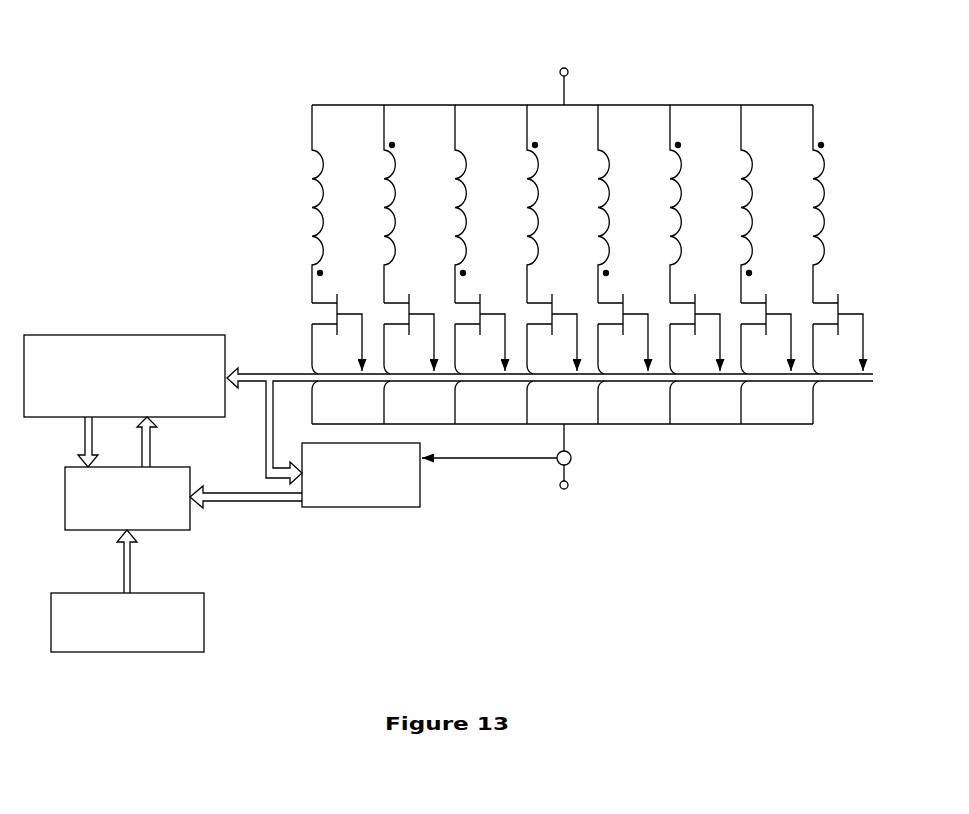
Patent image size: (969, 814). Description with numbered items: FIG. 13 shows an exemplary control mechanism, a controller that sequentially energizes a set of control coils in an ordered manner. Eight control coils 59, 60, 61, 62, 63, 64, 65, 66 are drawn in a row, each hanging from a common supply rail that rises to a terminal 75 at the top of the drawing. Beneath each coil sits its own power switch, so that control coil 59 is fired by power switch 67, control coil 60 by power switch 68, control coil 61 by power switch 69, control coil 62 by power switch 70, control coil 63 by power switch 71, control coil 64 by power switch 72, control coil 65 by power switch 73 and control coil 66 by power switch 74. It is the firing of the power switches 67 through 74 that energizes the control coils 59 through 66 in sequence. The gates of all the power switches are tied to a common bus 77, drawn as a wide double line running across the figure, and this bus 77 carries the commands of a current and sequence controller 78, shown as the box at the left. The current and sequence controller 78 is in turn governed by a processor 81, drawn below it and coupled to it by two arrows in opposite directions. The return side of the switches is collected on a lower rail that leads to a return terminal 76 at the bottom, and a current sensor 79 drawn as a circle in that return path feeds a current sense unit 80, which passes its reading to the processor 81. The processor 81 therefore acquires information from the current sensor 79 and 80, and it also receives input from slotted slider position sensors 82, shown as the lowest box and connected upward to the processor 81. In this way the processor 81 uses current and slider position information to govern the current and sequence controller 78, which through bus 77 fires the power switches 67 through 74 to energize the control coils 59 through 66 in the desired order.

The control coil 59 is at (309, 190).
The control coil 60 is at (381, 190).
The control coil 61 is at (452, 190).
The control coil 62 is at (524, 190).
The control coil 63 is at (595, 190).
The control coil 64 is at (667, 190).
The control coil 65 is at (738, 190).
The control coil 66 is at (810, 190).
The power switch 67 is at (329, 292).
The power switch 68 is at (401, 292).
The power switch 69 is at (472, 292).
The power switch 70 is at (544, 292).
The power switch 71 is at (615, 292).
The power switch 72 is at (687, 292).
The power switch 73 is at (758, 292).
The power switch 74 is at (830, 292).
The supply voltage terminal 75 is at (573, 61).
The return terminal 76 is at (557, 491).
The bus 77 is at (269, 371).
The current and sequence controller 78 is at (127, 333).
The current sensor 79 is at (581, 465).
The current sensor 80 is at (398, 514).
The processor 81 is at (170, 537).
The slotted slider position sensors 82 is at (209, 634).